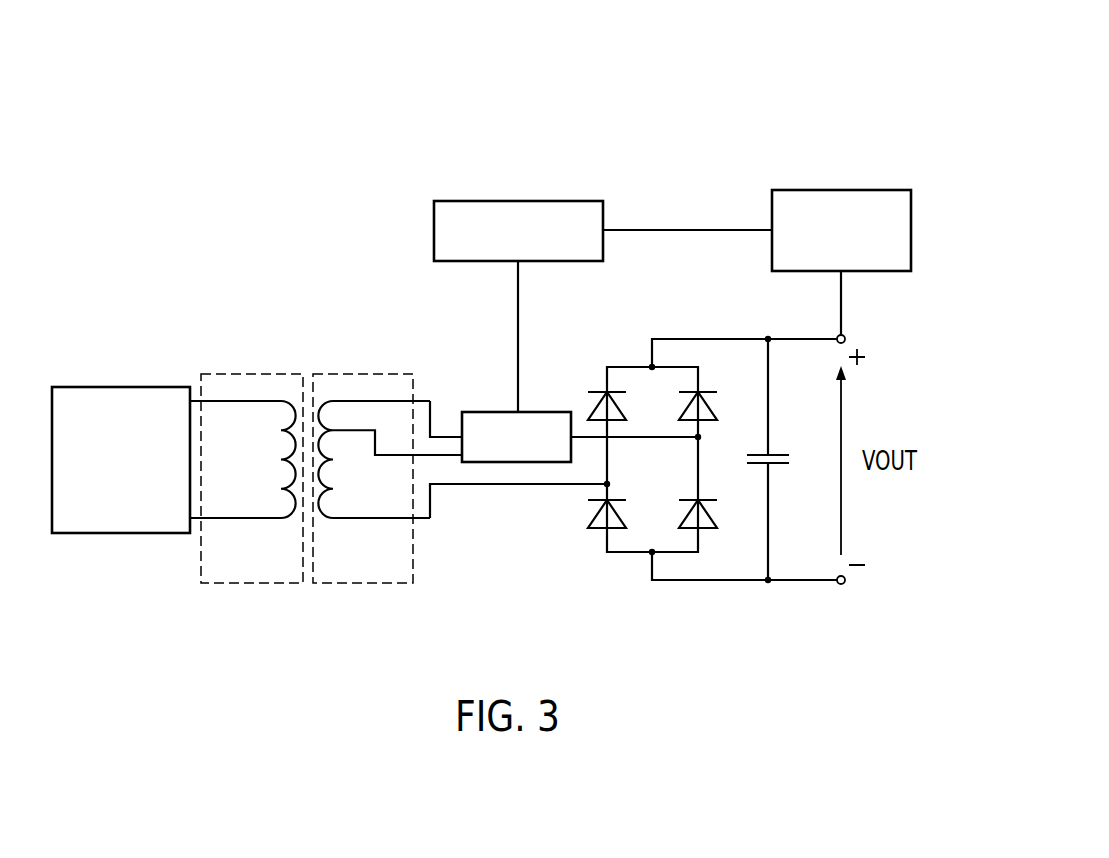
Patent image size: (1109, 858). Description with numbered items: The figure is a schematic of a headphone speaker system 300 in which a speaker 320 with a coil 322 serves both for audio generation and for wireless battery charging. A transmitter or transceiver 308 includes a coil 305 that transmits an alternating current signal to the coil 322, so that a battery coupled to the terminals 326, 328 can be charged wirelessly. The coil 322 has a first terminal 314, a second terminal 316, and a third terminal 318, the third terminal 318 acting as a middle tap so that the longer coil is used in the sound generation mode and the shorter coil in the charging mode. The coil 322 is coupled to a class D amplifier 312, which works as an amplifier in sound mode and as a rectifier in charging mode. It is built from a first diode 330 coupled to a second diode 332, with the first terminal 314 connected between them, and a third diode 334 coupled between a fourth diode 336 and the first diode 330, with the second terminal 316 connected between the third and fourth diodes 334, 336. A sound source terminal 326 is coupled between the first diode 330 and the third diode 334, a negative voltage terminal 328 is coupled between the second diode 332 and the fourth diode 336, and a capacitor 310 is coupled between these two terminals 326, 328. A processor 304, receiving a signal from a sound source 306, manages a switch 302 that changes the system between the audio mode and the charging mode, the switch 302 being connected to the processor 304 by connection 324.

The headphone speaker system 300 is at (822, 60).
The switch 302 is at (483, 411).
The processor 304 is at (484, 200).
The coil 305 is at (232, 400).
The sound source 306 is at (858, 190).
The transceiver 308 is at (112, 386).
The capacitor 310 is at (777, 468).
The class D amplifier 312 is at (644, 490).
The first terminal 314 is at (478, 487).
The second terminal 316 is at (448, 436).
The third terminal 318 is at (360, 429).
The speaker 320 is at (397, 469).
The coil 322 is at (322, 497).
The processor to switch connection 324 is at (519, 293).
The sound source terminal 326 is at (683, 338).
The negative voltage terminal 328 is at (722, 582).
The first diode 330 is at (590, 405).
The second diode 332 is at (590, 512).
The third diode 334 is at (712, 407).
The fourth diode 336 is at (713, 518).